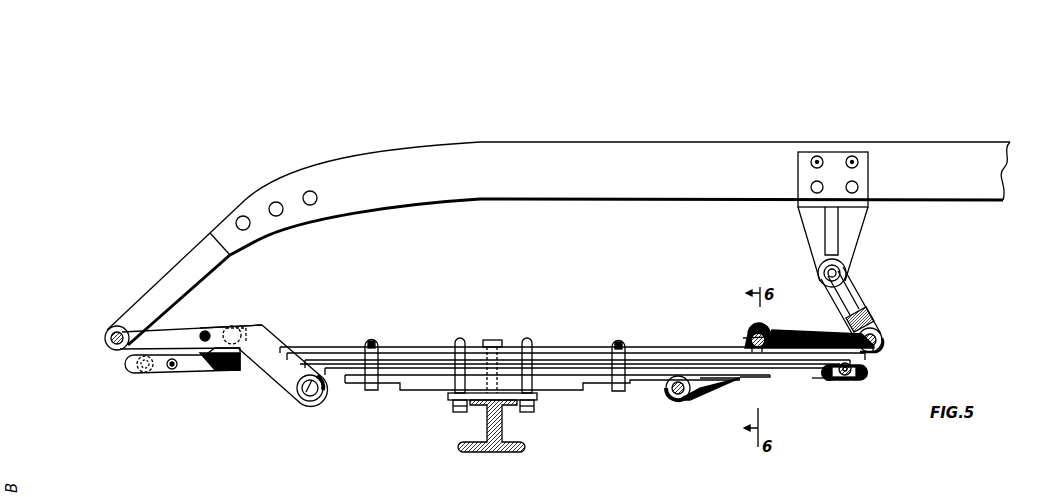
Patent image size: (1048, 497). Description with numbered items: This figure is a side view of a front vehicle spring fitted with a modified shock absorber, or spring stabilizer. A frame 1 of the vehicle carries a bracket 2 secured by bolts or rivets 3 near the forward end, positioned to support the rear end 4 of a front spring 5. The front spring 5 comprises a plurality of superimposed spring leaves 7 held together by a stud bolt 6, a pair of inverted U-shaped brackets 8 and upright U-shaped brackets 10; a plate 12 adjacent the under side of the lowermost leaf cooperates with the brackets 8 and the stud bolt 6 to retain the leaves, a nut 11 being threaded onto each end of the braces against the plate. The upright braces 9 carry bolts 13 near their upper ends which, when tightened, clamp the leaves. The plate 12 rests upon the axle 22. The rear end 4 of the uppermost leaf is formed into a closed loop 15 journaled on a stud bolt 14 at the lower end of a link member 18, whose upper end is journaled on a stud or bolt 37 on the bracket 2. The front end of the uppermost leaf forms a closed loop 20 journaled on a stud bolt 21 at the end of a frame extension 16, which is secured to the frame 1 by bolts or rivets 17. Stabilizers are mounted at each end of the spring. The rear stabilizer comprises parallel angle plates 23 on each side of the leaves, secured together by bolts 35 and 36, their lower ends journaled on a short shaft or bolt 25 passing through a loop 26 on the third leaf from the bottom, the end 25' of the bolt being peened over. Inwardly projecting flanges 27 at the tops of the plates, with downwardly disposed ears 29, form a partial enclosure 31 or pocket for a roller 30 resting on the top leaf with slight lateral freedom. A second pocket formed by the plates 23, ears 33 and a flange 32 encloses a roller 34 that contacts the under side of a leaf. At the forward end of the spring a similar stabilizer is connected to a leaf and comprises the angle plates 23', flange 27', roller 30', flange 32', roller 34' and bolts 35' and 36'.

The frame 1 is at (737, 152).
The bracket 2 is at (852, 238).
The bolts or rivets 3 is at (819, 160).
The rear end 4 is at (840, 340).
The front spring 5 is at (560, 350).
The stud bolt 6 is at (493, 340).
The spring leaves 7 is at (538, 352).
The inverted U-shaped brackets 8 is at (459, 338).
The upright U-shaped braces 9 is at (373, 340).
The upright U-shaped brackets 10 is at (372, 391).
The nut 11 is at (455, 405).
The plate 12 is at (537, 398).
The bolts 13 is at (366, 342).
The stud bolt 14 is at (884, 340).
The closed loop 15 is at (885, 352).
The frame extension 16 is at (172, 270).
The bolts or rivets 17 is at (305, 196).
The link member 18 is at (866, 296).
The closed loop 20 is at (103, 337).
The stud bolt 21 is at (116, 351).
The axle 22 is at (490, 424).
The angle plates 23 is at (789, 323).
The angle plates 23' is at (263, 362).
The short shaft or bolt 25 is at (670, 405).
The end 25' is at (297, 395).
The loop 26 is at (700, 400).
The flanges 27 is at (751, 326).
The flange 27' is at (257, 320).
The ears 29 is at (743, 338).
The roller 30 is at (738, 376).
The roller 30' is at (242, 318).
The enclosure or pocket 31 is at (762, 349).
The flange 32 is at (861, 385).
The flange 32' is at (162, 387).
The ears 33 is at (862, 373).
The roller 34 is at (847, 395).
The roller 34' is at (180, 375).
The bolt 35 is at (789, 317).
The bolt 35' is at (215, 317).
The bolt 36 is at (811, 410).
The bolt 36' is at (190, 378).
The stud or bolt 37 is at (848, 273).